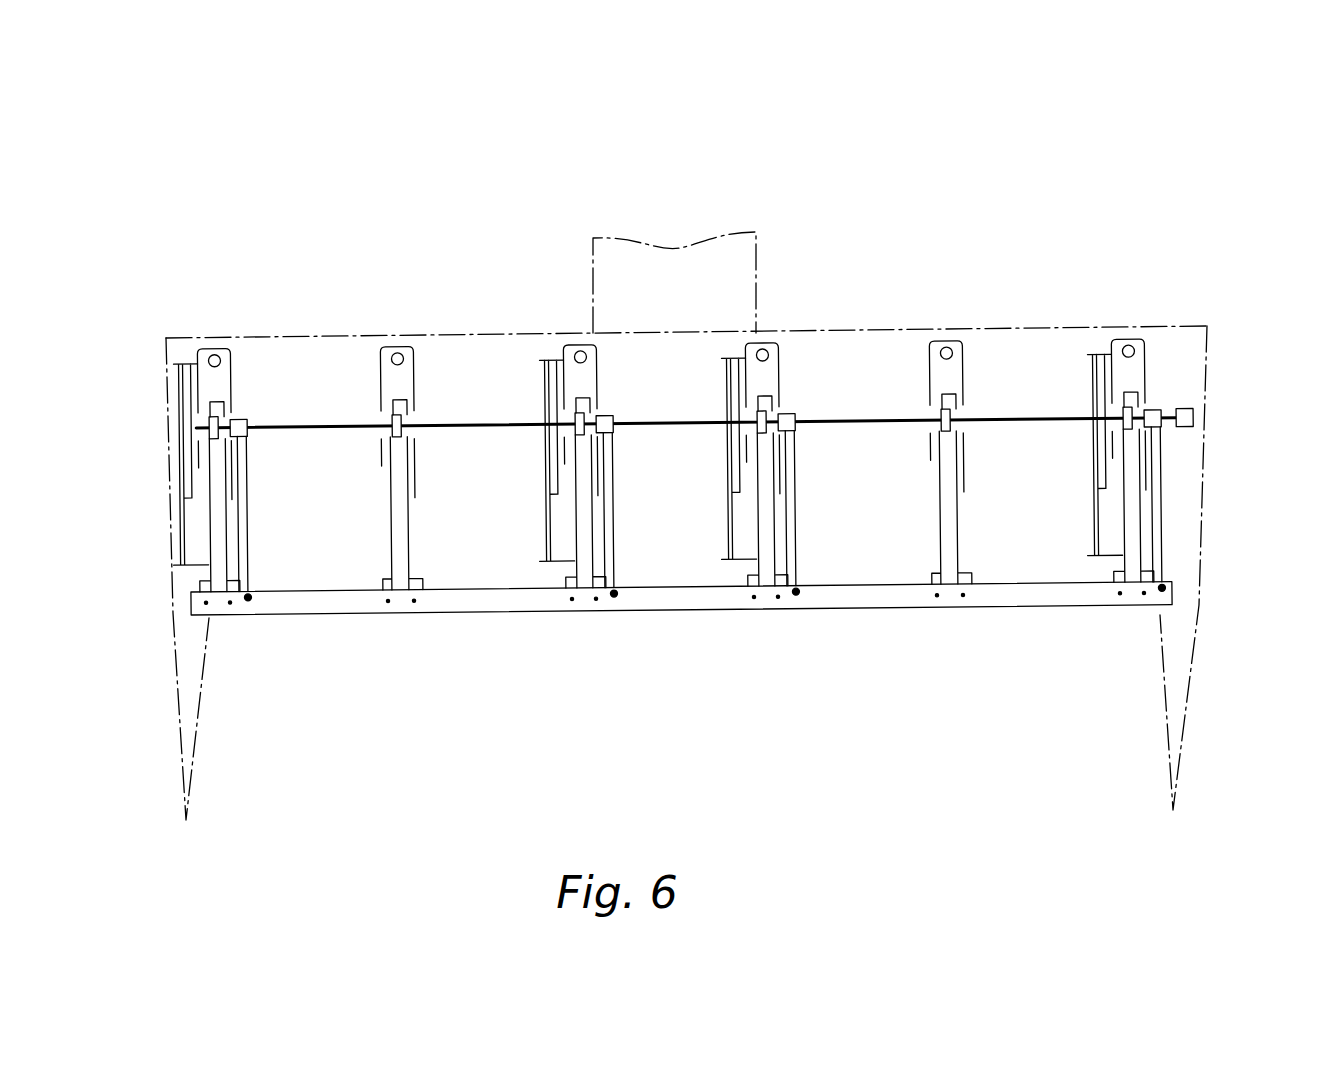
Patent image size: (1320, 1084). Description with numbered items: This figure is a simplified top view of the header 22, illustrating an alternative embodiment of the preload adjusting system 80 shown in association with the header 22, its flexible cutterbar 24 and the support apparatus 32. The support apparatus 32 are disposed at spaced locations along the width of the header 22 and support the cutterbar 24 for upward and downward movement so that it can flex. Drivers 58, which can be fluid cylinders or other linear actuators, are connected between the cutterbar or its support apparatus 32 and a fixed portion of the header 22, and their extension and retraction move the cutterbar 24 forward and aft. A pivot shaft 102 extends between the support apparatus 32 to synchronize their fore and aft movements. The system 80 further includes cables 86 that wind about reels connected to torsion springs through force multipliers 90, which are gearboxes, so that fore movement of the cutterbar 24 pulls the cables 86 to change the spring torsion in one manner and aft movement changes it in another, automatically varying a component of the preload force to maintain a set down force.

The header 22 is at (1061, 181).
The cutterbar 24 is at (861, 613).
The support apparatus 32 is at (395, 554).
The driver 58 is at (547, 383).
The preload adjusting system 80 is at (244, 416).
The cable 86 is at (252, 511).
The force multiplier 90 is at (252, 422).
The pivot shaft 102 is at (897, 418).